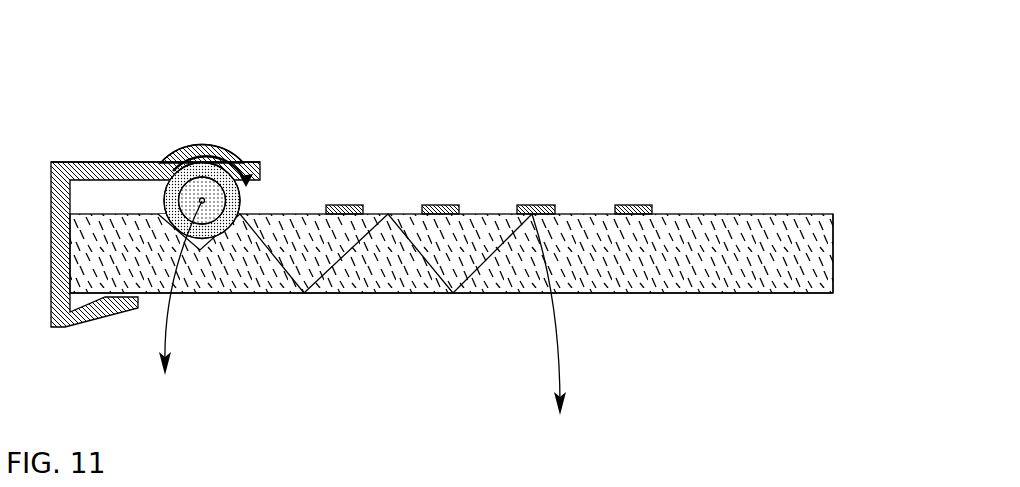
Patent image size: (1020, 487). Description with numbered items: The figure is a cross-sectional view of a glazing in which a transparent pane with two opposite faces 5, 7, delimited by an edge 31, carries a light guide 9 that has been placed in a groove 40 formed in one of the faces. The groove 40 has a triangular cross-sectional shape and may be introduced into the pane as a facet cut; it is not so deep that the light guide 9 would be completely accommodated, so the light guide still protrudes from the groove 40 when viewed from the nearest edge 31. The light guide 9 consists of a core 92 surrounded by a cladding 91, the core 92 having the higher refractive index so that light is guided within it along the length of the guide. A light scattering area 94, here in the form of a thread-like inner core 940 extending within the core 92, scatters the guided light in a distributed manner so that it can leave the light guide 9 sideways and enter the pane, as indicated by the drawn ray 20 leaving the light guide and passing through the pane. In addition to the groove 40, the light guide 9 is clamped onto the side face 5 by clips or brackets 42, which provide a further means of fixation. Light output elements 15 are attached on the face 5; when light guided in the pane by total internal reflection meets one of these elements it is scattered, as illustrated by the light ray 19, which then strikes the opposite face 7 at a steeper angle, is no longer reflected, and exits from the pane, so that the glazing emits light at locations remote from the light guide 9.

The face 5 is at (570, 214).
The face 7 is at (668, 294).
The light guide 9 is at (263, 166).
The light output elements 15 is at (345, 206).
The light ray 19 is at (555, 370).
The light ray through light guide 20 is at (163, 340).
The edge 31 is at (835, 247).
The groove 40 is at (157, 164).
The clips or brackets 42 is at (113, 163).
The cladding 91 is at (204, 177).
The core 92 is at (218, 168).
The light scattering area 94 is at (181, 158).
The inner core 940 is at (201, 153).